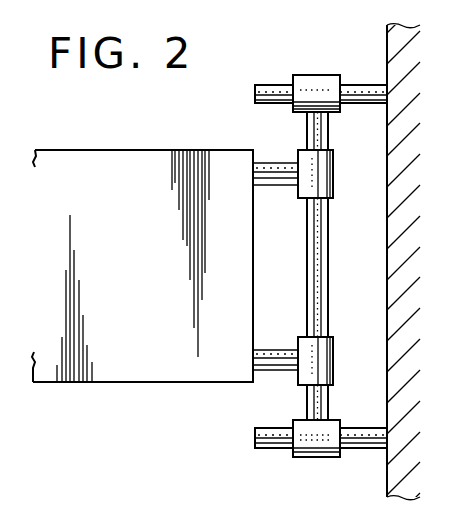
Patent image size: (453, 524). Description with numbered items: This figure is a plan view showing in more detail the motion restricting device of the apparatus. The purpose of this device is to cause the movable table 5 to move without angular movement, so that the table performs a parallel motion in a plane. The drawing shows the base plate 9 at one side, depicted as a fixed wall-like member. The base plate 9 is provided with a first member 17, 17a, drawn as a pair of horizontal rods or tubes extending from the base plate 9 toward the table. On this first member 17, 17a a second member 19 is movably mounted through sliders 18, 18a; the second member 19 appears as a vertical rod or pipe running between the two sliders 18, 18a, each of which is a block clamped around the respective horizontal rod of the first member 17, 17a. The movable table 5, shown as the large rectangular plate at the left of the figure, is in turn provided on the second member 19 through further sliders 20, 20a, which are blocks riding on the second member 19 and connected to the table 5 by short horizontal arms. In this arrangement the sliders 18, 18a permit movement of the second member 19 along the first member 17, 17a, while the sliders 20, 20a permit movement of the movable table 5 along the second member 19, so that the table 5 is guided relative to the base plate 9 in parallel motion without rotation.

The movable table 5 is at (150, 150).
The base plate 9 is at (387, 235).
The first member 17 is at (266, 86).
The first member 17a is at (264, 450).
The slider 18 is at (321, 78).
The slider 18a is at (324, 457).
The second member 19 is at (321, 292).
The slider 20 is at (334, 179).
The slider 20a is at (325, 363).